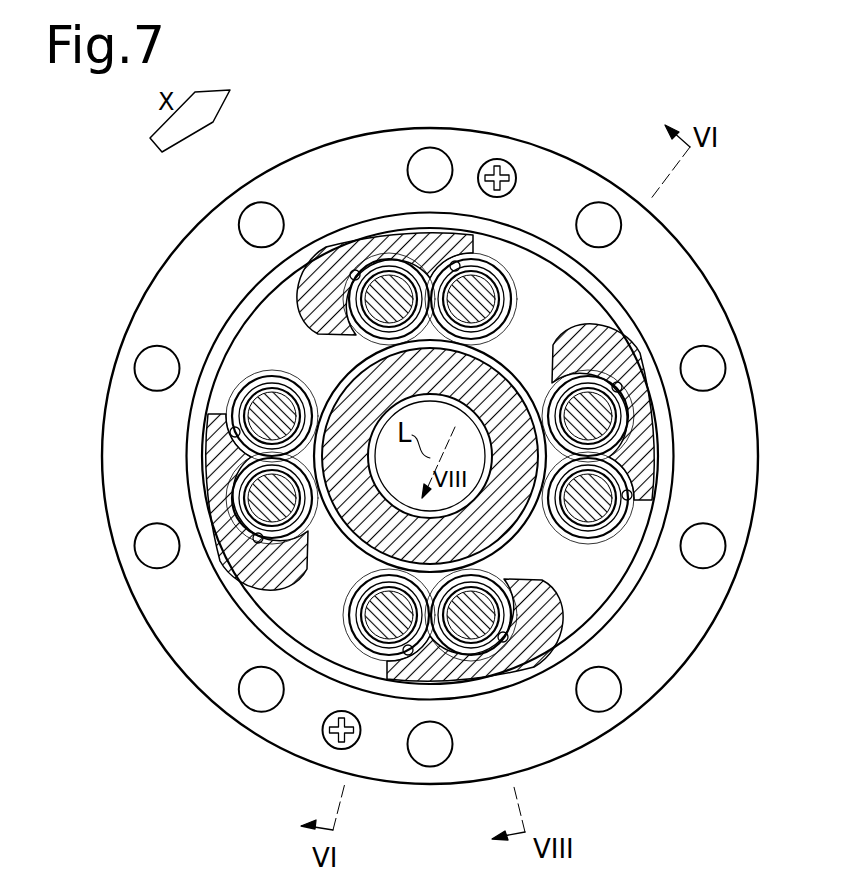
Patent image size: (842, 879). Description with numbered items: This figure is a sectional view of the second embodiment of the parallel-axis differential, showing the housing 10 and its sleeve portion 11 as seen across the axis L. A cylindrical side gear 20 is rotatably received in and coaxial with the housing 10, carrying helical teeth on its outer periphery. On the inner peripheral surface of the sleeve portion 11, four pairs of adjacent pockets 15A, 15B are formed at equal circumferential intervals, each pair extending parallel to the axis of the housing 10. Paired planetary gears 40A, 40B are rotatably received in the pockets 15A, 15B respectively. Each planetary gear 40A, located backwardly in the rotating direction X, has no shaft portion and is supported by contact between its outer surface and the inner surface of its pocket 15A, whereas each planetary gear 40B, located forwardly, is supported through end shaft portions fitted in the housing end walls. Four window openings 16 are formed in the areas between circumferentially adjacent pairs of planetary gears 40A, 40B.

The housing 10 is at (507, 137).
The sleeve portion 11 is at (660, 433).
The pocket 15A is at (355, 275).
The pocket 15B is at (455, 264).
The window opening 16 is at (530, 277).
The side gear 20 is at (497, 528).
The planetary gear 40A is at (385, 262).
The planetary gear 40B is at (495, 263).